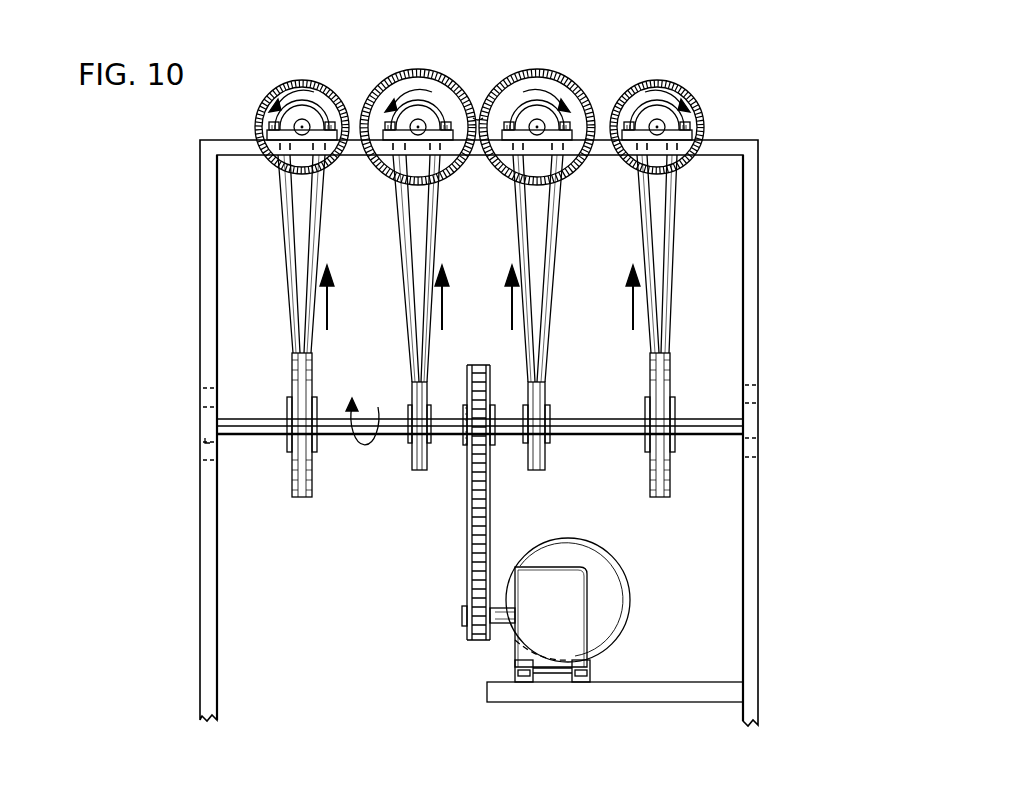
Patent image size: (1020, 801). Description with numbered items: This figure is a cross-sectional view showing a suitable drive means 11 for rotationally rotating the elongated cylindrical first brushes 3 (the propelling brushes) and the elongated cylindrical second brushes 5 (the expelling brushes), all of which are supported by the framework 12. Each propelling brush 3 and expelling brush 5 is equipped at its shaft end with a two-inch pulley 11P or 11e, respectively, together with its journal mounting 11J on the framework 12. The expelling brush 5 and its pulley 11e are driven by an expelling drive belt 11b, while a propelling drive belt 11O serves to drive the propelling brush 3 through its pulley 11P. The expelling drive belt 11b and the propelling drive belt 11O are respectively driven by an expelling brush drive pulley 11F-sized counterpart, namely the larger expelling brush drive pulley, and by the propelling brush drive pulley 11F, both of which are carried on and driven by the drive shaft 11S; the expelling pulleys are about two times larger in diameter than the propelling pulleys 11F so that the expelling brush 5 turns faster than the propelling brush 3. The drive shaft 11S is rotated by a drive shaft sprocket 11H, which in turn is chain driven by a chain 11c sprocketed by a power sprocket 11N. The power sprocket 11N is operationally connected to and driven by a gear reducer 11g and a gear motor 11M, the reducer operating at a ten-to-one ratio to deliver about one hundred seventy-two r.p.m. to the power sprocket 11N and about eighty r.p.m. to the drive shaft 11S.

The first brush 3 is at (399, 78).
The second brush 5 is at (291, 82).
The drive means 11 is at (268, 409).
The expelling drive belt 11b is at (292, 272).
The chain 11c is at (467, 509).
The pulley 11e is at (316, 103).
The propelling brush drive pulley 11F is at (408, 388).
The gear reducer 11g is at (572, 622).
The drive shaft sprocket 11H is at (468, 370).
The journal bearing 11J is at (412, 105).
The gear motor 11M is at (602, 558).
The power sprocket 11N is at (470, 630).
The propelling drive belt 11O is at (440, 203).
The pulley 11P is at (517, 105).
The drive shaft 11S is at (715, 437).
The framework 12 is at (758, 228).